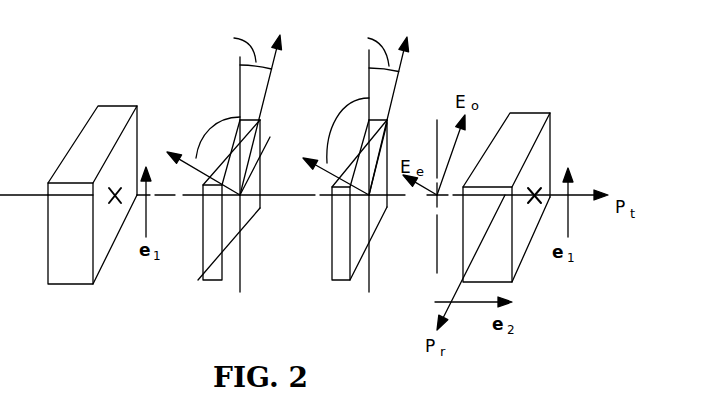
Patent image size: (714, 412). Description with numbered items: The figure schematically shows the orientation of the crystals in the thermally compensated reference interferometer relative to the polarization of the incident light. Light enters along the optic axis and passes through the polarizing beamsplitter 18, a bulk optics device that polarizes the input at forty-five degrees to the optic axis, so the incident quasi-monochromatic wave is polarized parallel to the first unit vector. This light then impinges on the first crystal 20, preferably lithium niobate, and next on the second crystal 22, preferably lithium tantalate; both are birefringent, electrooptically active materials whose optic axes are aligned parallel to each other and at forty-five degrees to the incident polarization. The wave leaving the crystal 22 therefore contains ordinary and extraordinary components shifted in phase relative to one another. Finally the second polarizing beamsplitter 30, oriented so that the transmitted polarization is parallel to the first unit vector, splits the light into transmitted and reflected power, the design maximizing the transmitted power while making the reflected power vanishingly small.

The polarizing beamsplitter 18 is at (60, 284).
The first crystal 20 is at (210, 282).
The second crystal 22 is at (340, 282).
The second polarizing beamsplitter 30 is at (525, 247).